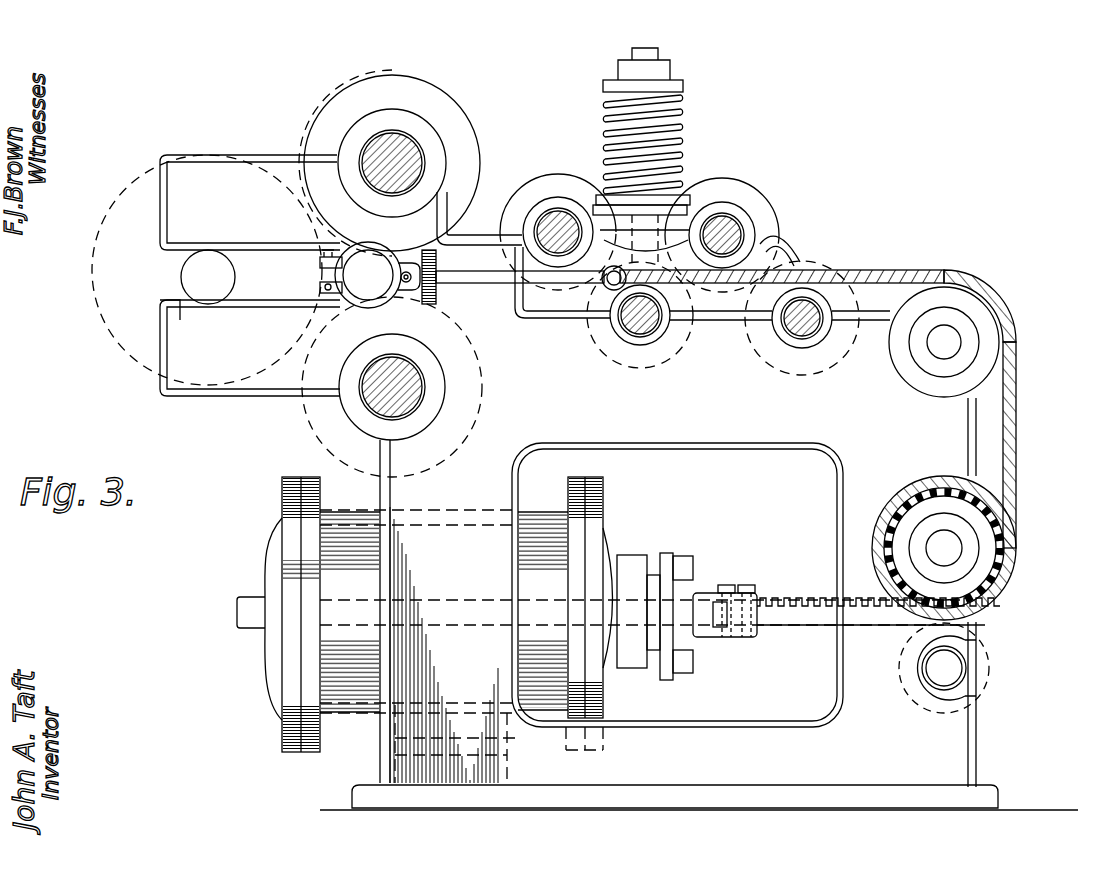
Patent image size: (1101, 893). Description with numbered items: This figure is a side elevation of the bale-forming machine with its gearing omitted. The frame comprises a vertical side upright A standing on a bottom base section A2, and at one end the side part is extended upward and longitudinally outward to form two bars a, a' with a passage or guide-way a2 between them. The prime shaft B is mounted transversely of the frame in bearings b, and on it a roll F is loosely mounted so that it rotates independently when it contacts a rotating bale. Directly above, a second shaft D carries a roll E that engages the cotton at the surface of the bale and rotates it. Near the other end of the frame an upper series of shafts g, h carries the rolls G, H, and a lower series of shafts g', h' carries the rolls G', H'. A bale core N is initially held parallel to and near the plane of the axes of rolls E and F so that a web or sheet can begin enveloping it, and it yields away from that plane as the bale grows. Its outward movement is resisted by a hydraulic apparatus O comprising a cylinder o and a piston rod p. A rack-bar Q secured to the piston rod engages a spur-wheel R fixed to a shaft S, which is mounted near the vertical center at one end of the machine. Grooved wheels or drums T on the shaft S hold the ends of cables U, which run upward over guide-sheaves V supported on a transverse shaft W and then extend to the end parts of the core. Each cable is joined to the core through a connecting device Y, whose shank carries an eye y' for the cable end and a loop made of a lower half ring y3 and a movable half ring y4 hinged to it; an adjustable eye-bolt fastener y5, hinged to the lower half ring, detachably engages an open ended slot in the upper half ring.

The roll E is at (398, 85).
The second shaft D is at (408, 142).
The bar a' is at (250, 174).
The bar a is at (250, 368).
The passage or guide-way a2 is at (178, 305).
The movable half ring y4 is at (355, 247).
The adjustable fastener y5 is at (320, 272).
The half ring y3 is at (345, 302).
The bale core N is at (355, 280).
The prime shaft B is at (383, 374).
The roll F is at (318, 412).
The bearings b is at (450, 386).
The roll H is at (558, 214).
The shaft h is at (558, 207).
The connecting device Y is at (563, 255).
The eye y' is at (537, 312).
The shaft h' is at (640, 346).
The roll H' is at (658, 331).
The roll G is at (722, 215).
The shaft g is at (744, 212).
The roll G' is at (808, 243).
The shaft g' is at (802, 333).
The side upright A is at (823, 549).
The guide-sheave V is at (988, 336).
The shaft W is at (940, 352).
The cable U is at (1022, 440).
The grooved wheel or drum T is at (950, 492).
The spur-wheel R is at (1018, 530).
The shaft S is at (950, 555).
The hydraulic apparatus O is at (677, 585).
The cylinder o is at (605, 597).
The piston rod p is at (703, 612).
The rack-bar Q is at (878, 588).
The bottom base section A2 is at (694, 790).